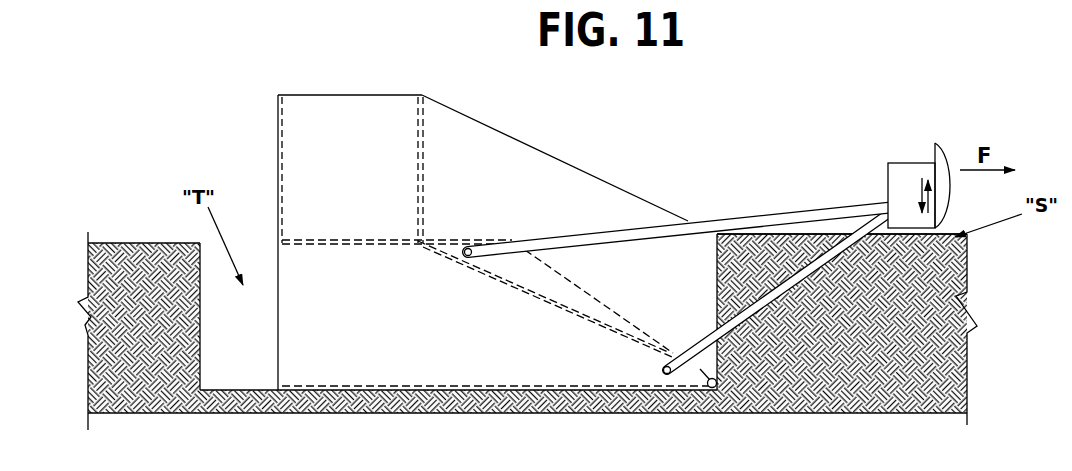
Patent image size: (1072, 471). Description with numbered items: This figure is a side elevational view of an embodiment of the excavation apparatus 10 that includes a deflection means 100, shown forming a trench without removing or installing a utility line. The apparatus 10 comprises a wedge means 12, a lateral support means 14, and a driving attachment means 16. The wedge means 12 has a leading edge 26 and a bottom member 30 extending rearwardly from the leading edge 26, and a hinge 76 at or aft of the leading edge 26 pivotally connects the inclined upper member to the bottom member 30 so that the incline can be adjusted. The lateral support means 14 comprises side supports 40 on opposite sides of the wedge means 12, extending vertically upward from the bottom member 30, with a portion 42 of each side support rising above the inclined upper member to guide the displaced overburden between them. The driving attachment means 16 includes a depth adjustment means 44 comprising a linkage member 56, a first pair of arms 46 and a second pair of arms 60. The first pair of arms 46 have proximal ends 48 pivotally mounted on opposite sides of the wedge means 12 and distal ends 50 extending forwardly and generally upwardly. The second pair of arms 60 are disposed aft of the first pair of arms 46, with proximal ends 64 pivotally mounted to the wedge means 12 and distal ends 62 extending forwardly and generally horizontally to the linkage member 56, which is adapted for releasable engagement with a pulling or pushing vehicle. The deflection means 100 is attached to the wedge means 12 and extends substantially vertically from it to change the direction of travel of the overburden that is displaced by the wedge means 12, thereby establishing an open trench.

The excavation apparatus 10 is at (428, 57).
The deflection means 100 is at (353, 78).
The wedge means 12 is at (550, 398).
The lateral support means 14 is at (642, 157).
The driving attachment means 16 is at (798, 147).
The leading edge 26 is at (720, 385).
The bottom member 30 is at (490, 387).
The side supports 40 is at (395, 370).
The portion of side support 42 is at (537, 167).
The depth adjustment means 44 is at (900, 140).
The first pair of arms 46 is at (820, 267).
The proximal ends of arms 48 is at (693, 357).
The distal ends of arms 50 is at (930, 252).
The linkage member 56 is at (920, 177).
The second pair of arms 60 is at (752, 217).
The distal ends of second arms 62 is at (875, 202).
The proximal ends of second arms 64 is at (488, 240).
The hinge 76 is at (715, 387).